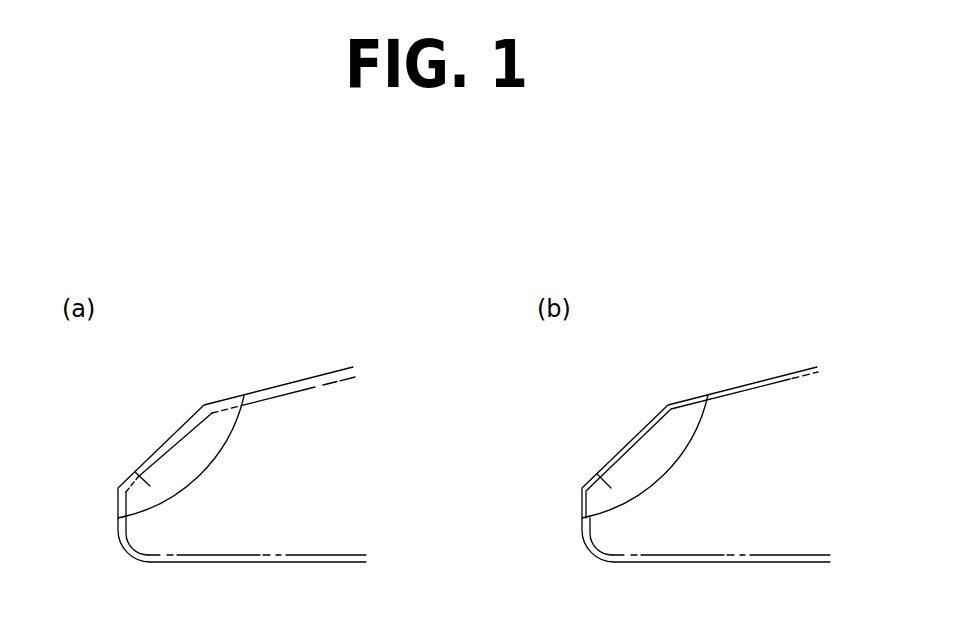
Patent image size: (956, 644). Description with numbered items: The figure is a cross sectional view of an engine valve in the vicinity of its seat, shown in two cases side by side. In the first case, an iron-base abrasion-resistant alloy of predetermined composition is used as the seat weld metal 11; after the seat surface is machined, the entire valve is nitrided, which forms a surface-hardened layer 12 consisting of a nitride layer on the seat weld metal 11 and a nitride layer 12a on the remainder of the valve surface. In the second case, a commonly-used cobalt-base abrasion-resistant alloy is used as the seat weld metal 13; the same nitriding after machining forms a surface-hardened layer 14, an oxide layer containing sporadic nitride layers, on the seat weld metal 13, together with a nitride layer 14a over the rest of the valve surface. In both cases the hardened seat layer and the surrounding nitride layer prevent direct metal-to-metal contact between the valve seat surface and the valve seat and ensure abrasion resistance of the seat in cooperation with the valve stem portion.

The seat weld metal 11 is at (135, 473).
The surface-hardened layer 12 is at (187, 427).
The nitride layer 12a is at (313, 380).
The seat weld metal 13 is at (597, 478).
The surface-hardened layer 14 is at (643, 427).
The nitride layer 14a is at (772, 382).